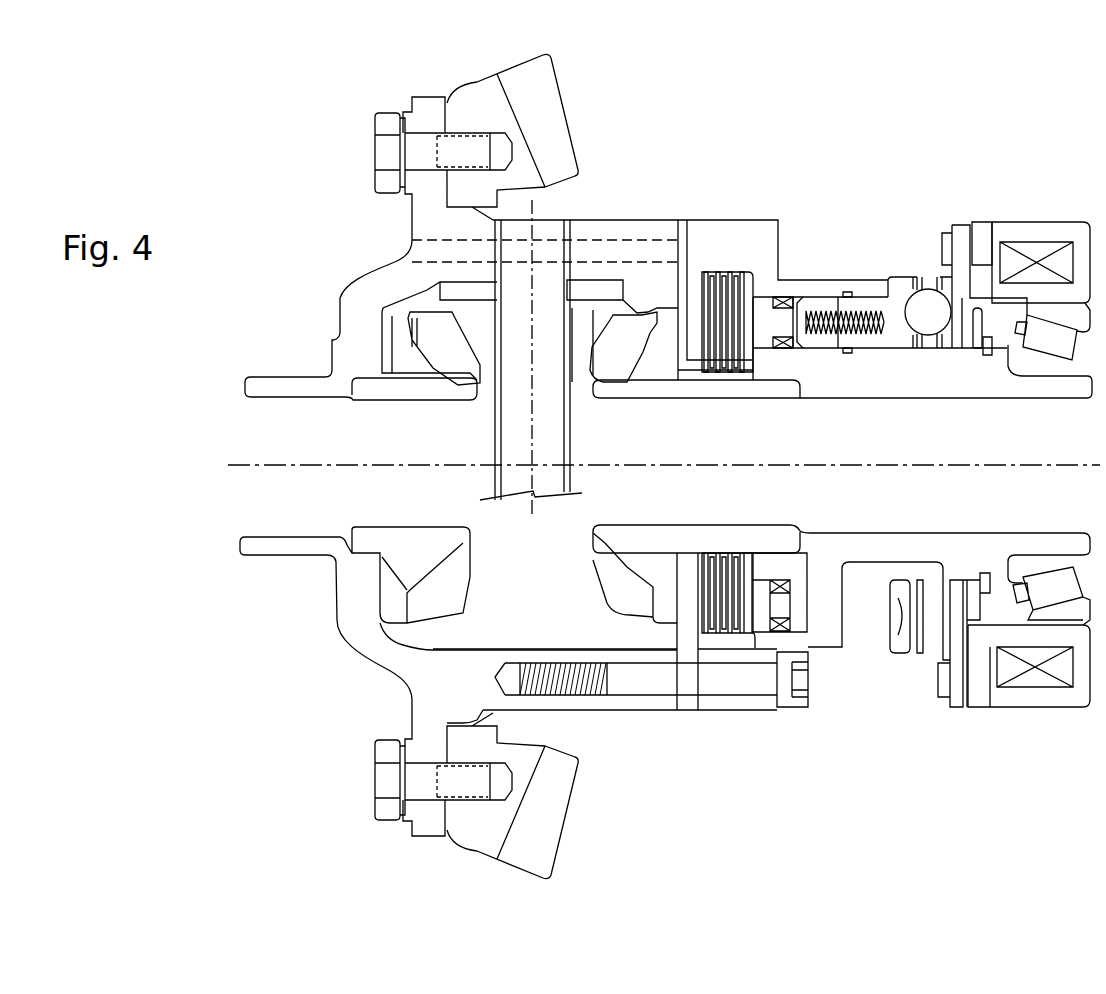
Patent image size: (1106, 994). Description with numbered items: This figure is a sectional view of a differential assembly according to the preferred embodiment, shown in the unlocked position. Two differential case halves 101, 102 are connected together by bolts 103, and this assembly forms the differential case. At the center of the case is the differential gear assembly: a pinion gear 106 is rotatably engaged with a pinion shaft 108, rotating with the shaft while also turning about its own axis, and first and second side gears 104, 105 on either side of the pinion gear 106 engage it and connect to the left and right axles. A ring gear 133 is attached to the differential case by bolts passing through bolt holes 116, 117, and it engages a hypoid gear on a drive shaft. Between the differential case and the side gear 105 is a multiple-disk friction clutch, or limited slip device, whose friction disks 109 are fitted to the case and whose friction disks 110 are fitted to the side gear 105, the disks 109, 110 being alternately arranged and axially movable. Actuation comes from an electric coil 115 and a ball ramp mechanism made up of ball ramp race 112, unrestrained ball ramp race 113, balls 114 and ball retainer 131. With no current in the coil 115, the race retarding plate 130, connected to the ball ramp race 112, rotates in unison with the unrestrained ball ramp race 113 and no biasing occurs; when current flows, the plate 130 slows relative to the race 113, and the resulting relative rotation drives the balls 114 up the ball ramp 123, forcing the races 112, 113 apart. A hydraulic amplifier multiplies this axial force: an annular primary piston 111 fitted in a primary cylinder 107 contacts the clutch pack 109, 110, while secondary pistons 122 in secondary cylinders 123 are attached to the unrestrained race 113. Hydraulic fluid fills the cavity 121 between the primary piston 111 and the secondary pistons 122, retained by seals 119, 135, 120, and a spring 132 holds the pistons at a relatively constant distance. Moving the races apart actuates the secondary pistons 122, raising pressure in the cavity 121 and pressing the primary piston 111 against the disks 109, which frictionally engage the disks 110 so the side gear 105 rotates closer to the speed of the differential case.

The differential case half 101 is at (738, 703).
The differential case half 102 is at (640, 703).
The bolts 103 is at (810, 682).
The first side gear 104 is at (377, 582).
The second side gear 105 is at (785, 392).
The pinion gear 106 is at (482, 342).
The primary cylinder 107 is at (845, 350).
The pinion shaft 108 is at (552, 228).
The friction disks 109 is at (707, 377).
The friction disks 110 is at (697, 352).
The primary piston 111 is at (765, 340).
The ball ramp race 112 is at (960, 224).
The unrestrained ball ramp race 113 is at (903, 277).
The balls 114 is at (938, 323).
The coil 115 is at (1035, 250).
The bolt hole 116 is at (450, 797).
The bolt hole 117 is at (457, 137).
The seal 119 is at (785, 295).
The seal 120 is at (850, 292).
The cavity 121 is at (822, 350).
The secondary pistons 122 is at (955, 350).
The secondary cylinders 123 is at (875, 350).
The race retarding plate 130 is at (978, 224).
The ball retainer 131 is at (923, 289).
The spring 132 is at (822, 300).
The ring gear 133 is at (477, 90).
The seal 135 is at (782, 580).